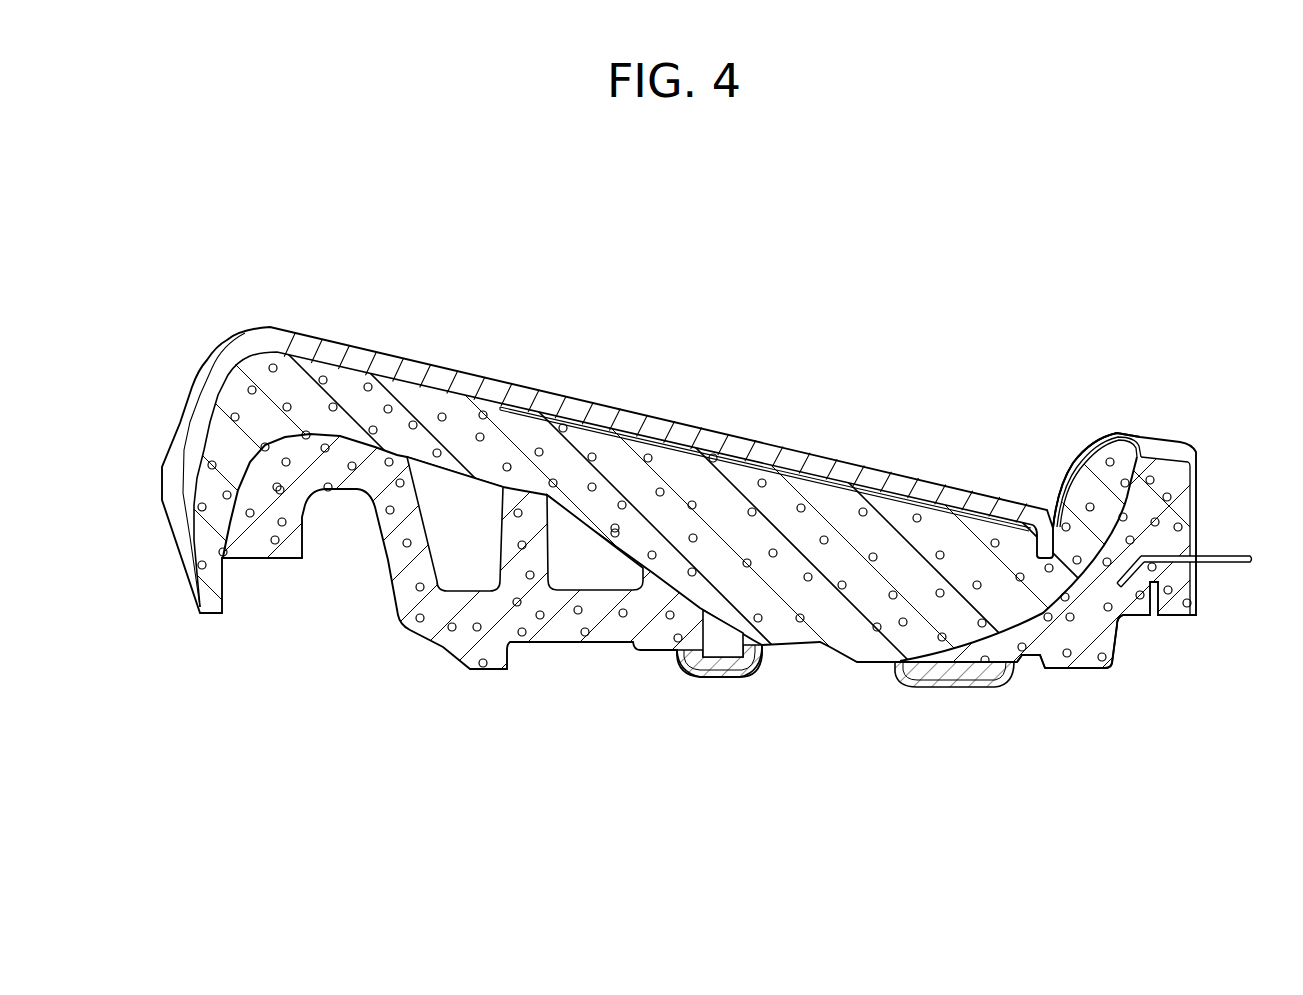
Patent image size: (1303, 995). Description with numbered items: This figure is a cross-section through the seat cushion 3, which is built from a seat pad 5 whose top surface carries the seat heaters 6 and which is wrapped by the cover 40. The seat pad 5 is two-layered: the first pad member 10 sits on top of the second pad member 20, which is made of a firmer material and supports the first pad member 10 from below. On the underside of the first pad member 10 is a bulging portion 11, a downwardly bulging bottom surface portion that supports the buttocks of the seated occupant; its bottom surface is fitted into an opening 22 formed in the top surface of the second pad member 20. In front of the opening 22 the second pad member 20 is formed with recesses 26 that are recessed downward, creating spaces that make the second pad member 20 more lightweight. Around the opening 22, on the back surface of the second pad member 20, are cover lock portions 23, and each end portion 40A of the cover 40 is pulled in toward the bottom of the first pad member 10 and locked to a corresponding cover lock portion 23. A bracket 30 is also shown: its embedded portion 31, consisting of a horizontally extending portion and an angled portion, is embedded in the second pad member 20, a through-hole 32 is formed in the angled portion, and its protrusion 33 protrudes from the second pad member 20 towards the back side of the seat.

The seat cushion 3 is at (1222, 384).
The seat pad 5 is at (1107, 388).
The seat heater 6 is at (1052, 500).
The first pad member 10 is at (1123, 440).
The second pad member 20 is at (1170, 480).
The bulging portion 11 is at (849, 637).
The opening 22 is at (807, 680).
The cover lock portion 23 is at (678, 653).
The recess 26 is at (472, 565).
The bracket 30 is at (1202, 561).
The embedded portion 31 is at (1104, 602).
The through-hole 32 is at (1130, 577).
The protrusion 33 is at (1224, 584).
The cover 40 is at (448, 378).
The end portion of the cover 40A is at (720, 672).